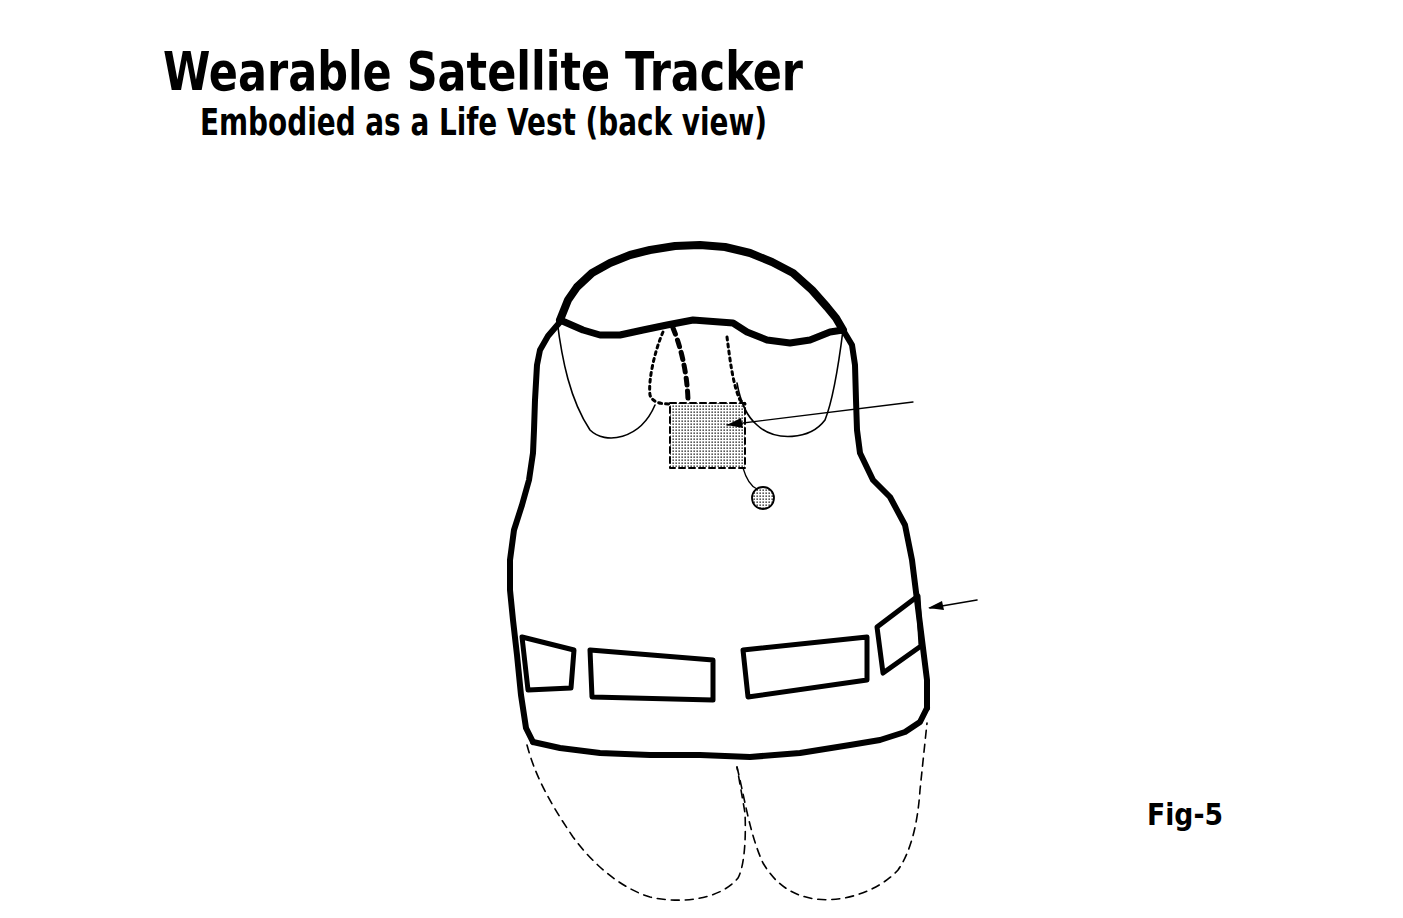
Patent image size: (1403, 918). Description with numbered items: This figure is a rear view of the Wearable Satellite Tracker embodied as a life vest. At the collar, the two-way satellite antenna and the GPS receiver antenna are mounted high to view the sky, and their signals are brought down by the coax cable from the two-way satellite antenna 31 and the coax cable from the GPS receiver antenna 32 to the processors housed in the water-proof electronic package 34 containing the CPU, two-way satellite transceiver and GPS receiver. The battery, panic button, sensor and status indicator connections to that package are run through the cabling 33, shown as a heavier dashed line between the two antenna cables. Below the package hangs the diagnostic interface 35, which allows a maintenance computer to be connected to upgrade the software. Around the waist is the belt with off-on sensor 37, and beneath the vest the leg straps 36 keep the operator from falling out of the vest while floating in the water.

The coax cable from the two-way satellite antenna 31 is at (737, 383).
The coax cable from the GPS receiver antenna 32 is at (652, 405).
The cabling for battery, panic button, sensor and status indicator connections 33 is at (685, 353).
The electronic package 34 is at (667, 436).
The diagnostic interface 35 is at (792, 494).
The leg straps 36 is at (560, 819).
The belt with off-on sensor 37 is at (505, 652).